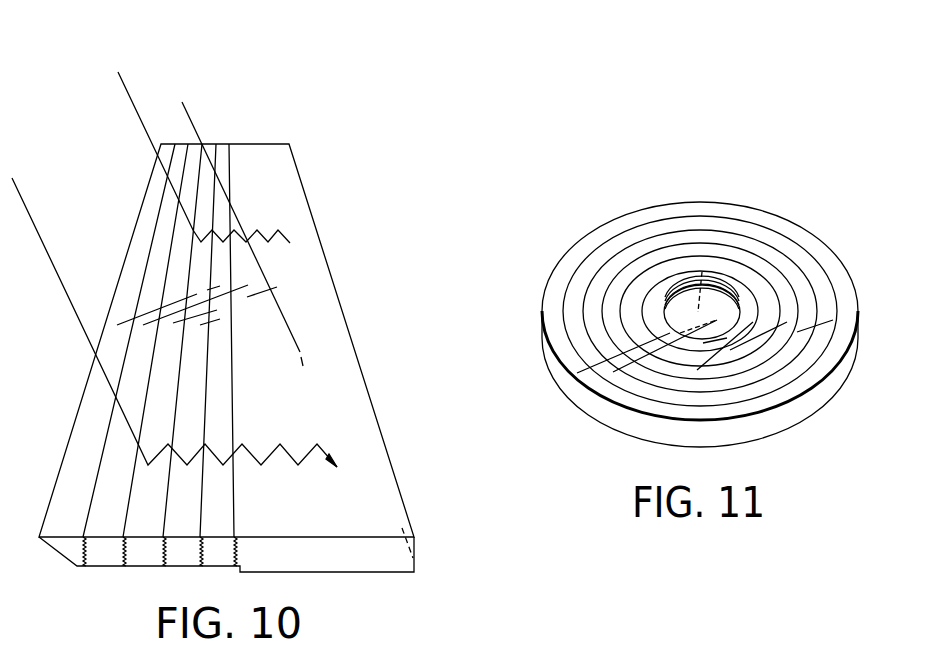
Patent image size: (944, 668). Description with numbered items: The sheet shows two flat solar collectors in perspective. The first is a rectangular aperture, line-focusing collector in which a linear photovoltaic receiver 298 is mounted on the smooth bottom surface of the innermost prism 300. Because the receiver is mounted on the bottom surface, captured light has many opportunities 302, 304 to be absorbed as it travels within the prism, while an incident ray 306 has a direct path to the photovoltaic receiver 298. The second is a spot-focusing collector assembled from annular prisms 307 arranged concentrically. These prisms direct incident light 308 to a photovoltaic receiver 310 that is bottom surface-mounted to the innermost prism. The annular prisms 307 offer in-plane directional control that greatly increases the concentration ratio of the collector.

In FIG. 10, the linear photovoltaic receiver 298 is at (364, 572).
In FIG. 10, the innermost prism 300 is at (317, 278).
In FIG. 10, the opportunity for captured light to be absorbed 302 is at (262, 460).
In FIG. 10, the opportunity for captured light to be absorbed 304 is at (298, 468).
In FIG. 10, the incident ray 306 is at (226, 107).
In FIG. 11, the annular prisms 307 is at (598, 342).
In FIG. 11, the incident light 308 is at (690, 338).
In FIG. 11, the photovoltaic receiver 310 is at (702, 272).